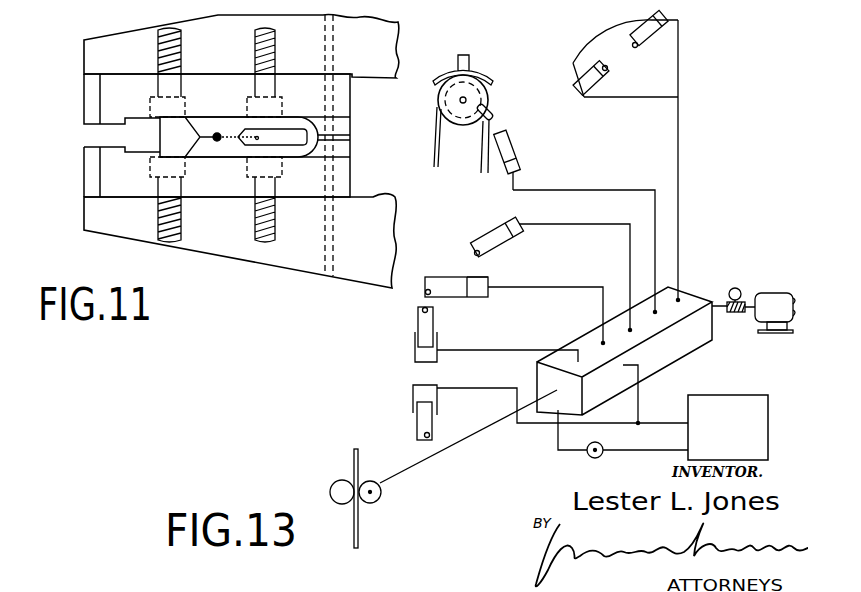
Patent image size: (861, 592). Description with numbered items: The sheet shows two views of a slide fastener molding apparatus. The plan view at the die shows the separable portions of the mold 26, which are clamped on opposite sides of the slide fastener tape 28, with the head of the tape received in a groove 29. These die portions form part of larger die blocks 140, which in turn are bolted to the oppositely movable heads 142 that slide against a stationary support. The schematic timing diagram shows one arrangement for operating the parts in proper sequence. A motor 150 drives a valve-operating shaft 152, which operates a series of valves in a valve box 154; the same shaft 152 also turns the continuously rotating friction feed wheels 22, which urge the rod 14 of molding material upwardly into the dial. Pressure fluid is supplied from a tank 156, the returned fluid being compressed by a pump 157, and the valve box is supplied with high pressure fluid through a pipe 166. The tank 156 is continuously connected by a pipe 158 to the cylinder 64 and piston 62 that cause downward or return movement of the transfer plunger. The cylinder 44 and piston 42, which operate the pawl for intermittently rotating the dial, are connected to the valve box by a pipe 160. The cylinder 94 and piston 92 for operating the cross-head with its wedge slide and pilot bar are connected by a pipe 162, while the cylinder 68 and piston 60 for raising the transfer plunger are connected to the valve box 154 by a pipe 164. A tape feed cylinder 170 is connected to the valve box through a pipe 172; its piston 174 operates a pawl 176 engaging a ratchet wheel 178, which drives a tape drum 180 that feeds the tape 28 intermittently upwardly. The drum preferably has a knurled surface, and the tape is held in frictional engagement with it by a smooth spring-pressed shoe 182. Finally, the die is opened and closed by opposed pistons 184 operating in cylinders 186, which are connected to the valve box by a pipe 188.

In FIG. 11, the oppositely movable heads 142 is at (132, 38).
In FIG. 11, the die blocks 140 is at (110, 88).
In FIG. 11, the mold 26 is at (208, 128).
In FIG. 11, the slide fastener tape 28 is at (260, 138).
In FIG. 13, the slide fastener tape 28 is at (434, 131).
In FIG. 11, the groove 29 is at (197, 138).
In FIG. 13, the spring-pressed shoe 182 is at (478, 67).
In FIG. 13, the cylinders 186 is at (609, 58).
In FIG. 13, the opposed pistons 184 is at (643, 56).
In FIG. 13, the pipe 188 is at (680, 118).
In FIG. 13, the pawl 176 is at (495, 113).
In FIG. 13, the ratchet wheel 178 is at (467, 147).
In FIG. 13, the tape drum 180 is at (465, 151).
In FIG. 13, the piston 174 is at (515, 143).
In FIG. 13, the tape feed cylinder 170 is at (519, 165).
In FIG. 13, the pipe 172 is at (598, 190).
In FIG. 13, the cylinder 44 is at (500, 225).
In FIG. 13, the piston 42 is at (483, 235).
In FIG. 13, the pipe 160 is at (572, 226).
In FIG. 13, the piston 92 is at (428, 278).
In FIG. 13, the cylinder 94 is at (477, 278).
In FIG. 13, the pipe 162 is at (548, 287).
In FIG. 13, the piston 60 is at (435, 313).
In FIG. 13, the cylinder 68 is at (413, 350).
In FIG. 13, the pipe 164 is at (472, 351).
In FIG. 13, the valve box 154 is at (697, 295).
In FIG. 13, the motor 150 is at (773, 293).
In FIG. 13, the valve-operating shaft 152 is at (717, 308).
In FIG. 13, the tank 156 is at (740, 394).
In FIG. 13, the pipe 166 is at (639, 397).
In FIG. 13, the pump 157 is at (594, 456).
In FIG. 13, the cylinder 64 is at (415, 403).
In FIG. 13, the pipe 158 is at (448, 388).
In FIG. 13, the piston 62 is at (415, 425).
In FIG. 13, the rod 14 is at (353, 458).
In FIG. 13, the friction feed wheels 22 is at (330, 492).